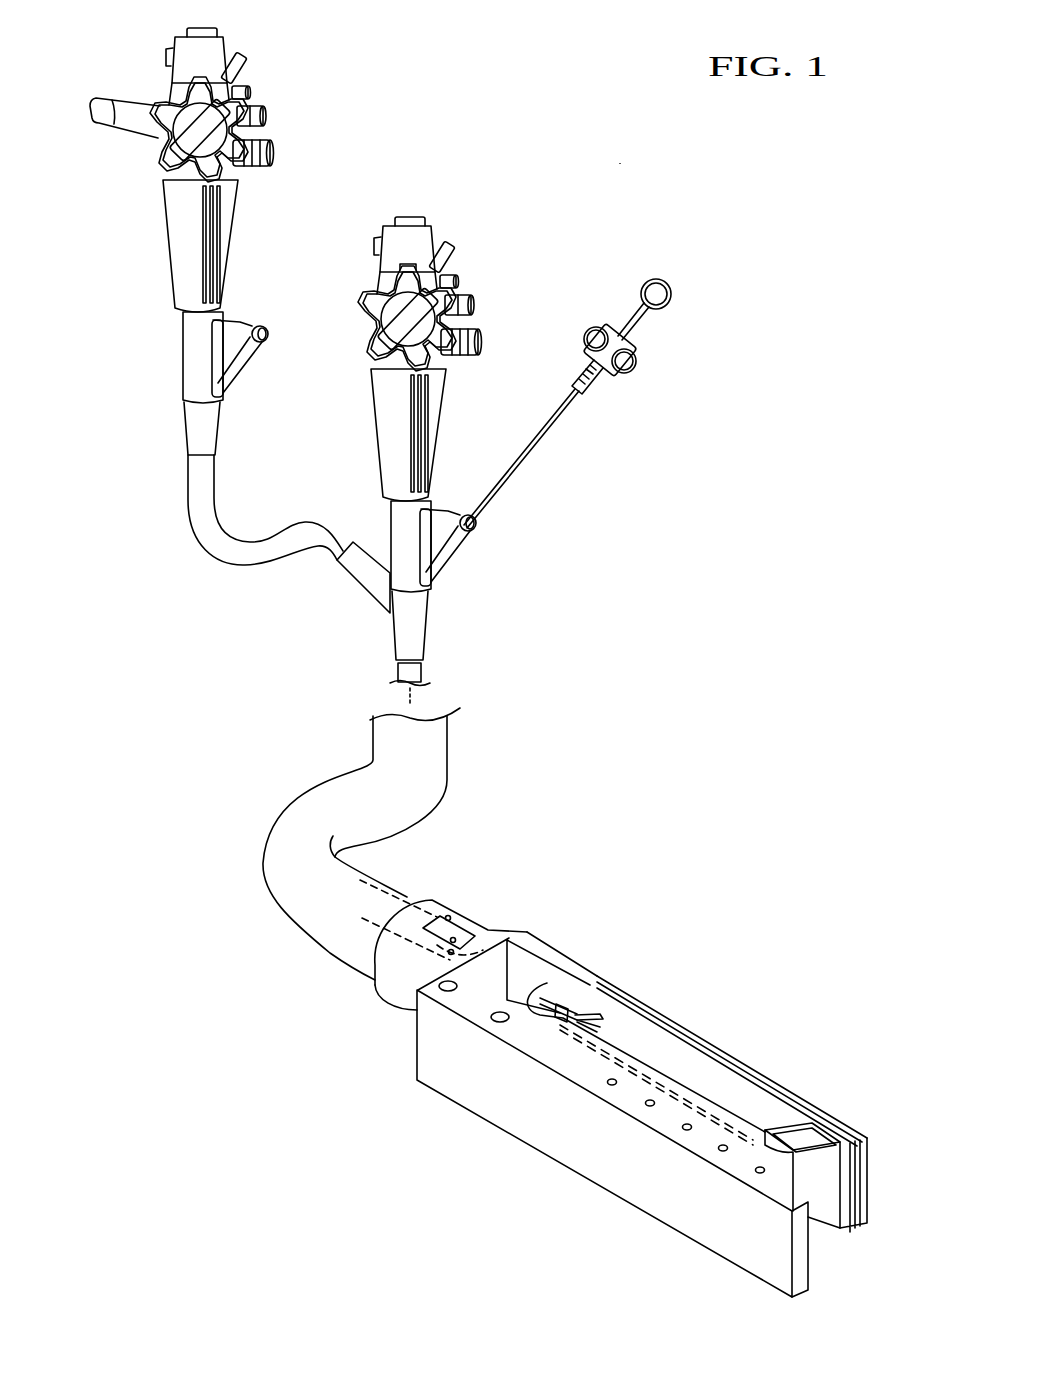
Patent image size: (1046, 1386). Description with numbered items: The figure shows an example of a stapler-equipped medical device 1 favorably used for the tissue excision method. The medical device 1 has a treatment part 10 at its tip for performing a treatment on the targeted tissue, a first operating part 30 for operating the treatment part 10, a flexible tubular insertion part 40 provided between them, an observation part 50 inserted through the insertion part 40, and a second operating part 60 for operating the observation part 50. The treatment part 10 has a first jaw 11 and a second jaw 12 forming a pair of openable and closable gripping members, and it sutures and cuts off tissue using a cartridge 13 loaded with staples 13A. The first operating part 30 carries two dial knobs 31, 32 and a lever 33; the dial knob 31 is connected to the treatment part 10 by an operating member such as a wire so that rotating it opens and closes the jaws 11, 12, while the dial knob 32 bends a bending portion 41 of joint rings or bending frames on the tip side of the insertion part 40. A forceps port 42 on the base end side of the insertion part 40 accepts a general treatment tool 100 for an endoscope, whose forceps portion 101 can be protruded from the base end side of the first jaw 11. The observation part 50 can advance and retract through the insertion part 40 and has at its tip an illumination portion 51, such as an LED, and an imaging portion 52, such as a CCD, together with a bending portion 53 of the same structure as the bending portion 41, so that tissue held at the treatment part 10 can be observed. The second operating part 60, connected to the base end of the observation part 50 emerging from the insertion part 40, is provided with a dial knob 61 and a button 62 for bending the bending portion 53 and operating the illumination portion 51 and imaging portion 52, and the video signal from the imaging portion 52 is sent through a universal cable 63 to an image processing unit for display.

The medical device 1 is at (614, 225).
The treatment part 10 is at (690, 1013).
The first jaw 11 is at (740, 1067).
The second jaw 12 is at (640, 1175).
The cartridge 13 is at (787, 1158).
The staples 13A is at (623, 1070).
The first operating part 30 is at (490, 315).
The dial knob 31 is at (412, 290).
The dial knob 32 is at (412, 272).
The lever 33 is at (450, 258).
The insertion part 40 is at (433, 782).
The bending portion 41 is at (275, 868).
The forceps port 42 is at (470, 524).
The observation part 50 is at (210, 573).
The illumination portion 51 is at (468, 938).
The imaging portion 52 is at (455, 940).
The bending portion 53 is at (400, 895).
The second operating part 60 is at (290, 148).
The dial knob 61 is at (160, 90).
The button 62 is at (277, 105).
The universal cable 63 is at (103, 115).
The treatment tool 100 is at (605, 432).
The forceps portion 101 is at (588, 1010).